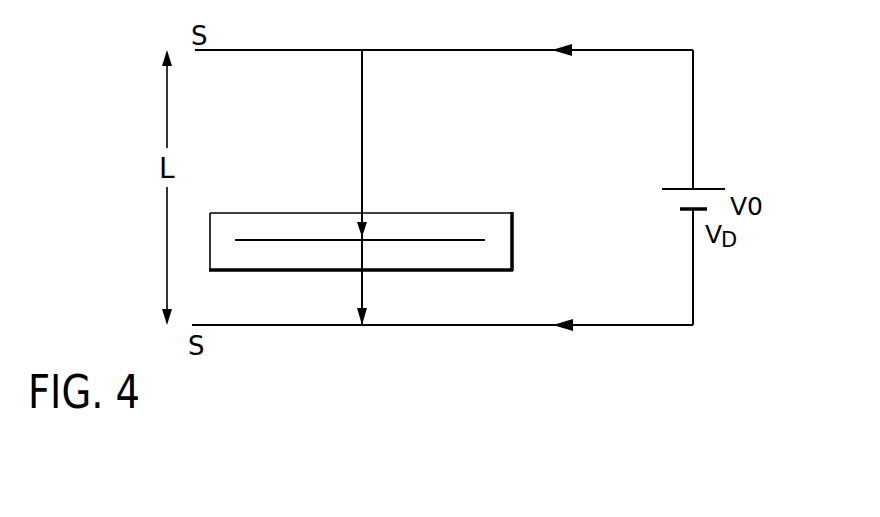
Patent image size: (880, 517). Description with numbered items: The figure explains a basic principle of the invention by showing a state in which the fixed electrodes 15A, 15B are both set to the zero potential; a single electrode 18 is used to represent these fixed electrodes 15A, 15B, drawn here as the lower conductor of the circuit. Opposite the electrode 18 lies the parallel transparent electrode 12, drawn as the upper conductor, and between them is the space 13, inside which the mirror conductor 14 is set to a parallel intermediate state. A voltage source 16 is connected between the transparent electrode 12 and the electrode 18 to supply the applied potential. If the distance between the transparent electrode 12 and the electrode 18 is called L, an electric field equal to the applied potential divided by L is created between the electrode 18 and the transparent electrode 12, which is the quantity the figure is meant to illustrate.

The transparent electrode 12 is at (462, 48).
The space 13 is at (289, 213).
The mirror conductor 14 is at (293, 241).
The fixed electrode 15A is at (442, 325).
The fixed electrode 15B is at (462, 327).
The power supply (battery) 16 is at (712, 178).
The electrode 18 is at (442, 359).